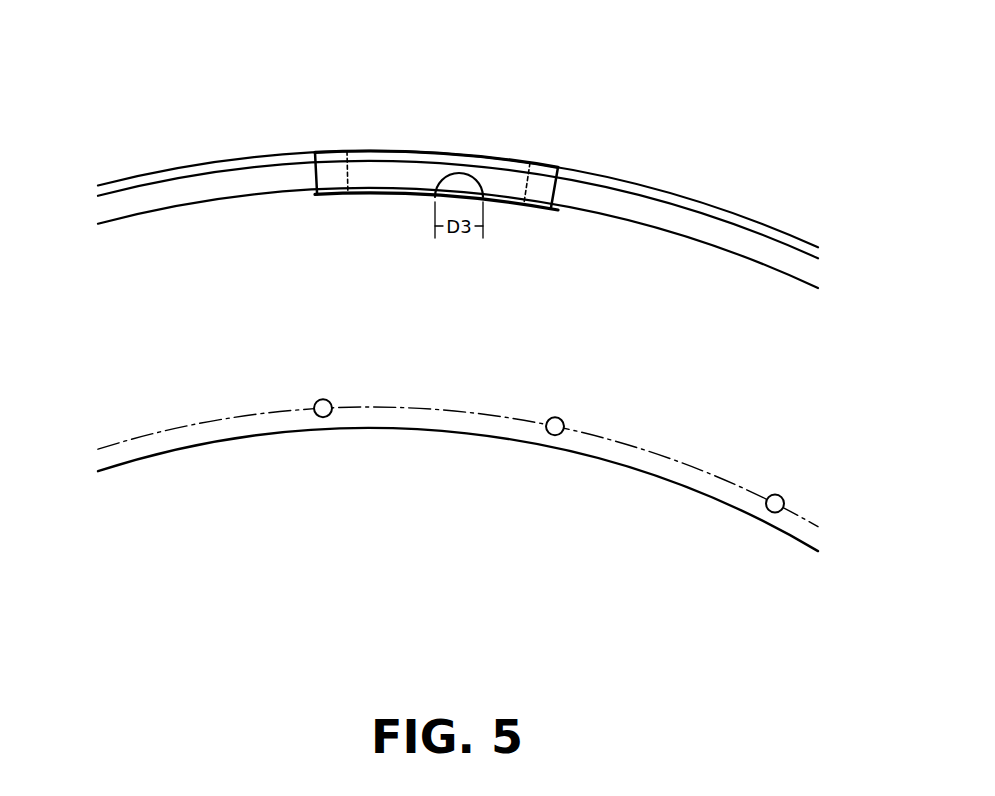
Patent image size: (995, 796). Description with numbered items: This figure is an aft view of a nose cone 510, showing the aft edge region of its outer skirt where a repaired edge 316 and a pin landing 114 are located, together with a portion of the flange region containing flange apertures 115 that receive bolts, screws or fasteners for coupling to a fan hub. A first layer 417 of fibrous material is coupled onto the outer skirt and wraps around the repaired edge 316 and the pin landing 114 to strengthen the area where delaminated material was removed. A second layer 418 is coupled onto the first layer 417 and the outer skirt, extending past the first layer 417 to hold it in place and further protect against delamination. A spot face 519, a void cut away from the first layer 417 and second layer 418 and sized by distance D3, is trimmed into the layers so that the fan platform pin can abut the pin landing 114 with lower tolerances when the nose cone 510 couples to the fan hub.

The repaired edge 316 is at (237, 157).
The pin landing 114 is at (270, 182).
The first layer 417 is at (390, 170).
The spot face 519 is at (462, 177).
The second layer 418 is at (541, 192).
The nose cone 510 is at (732, 108).
The flange aperture 115 is at (323, 415).